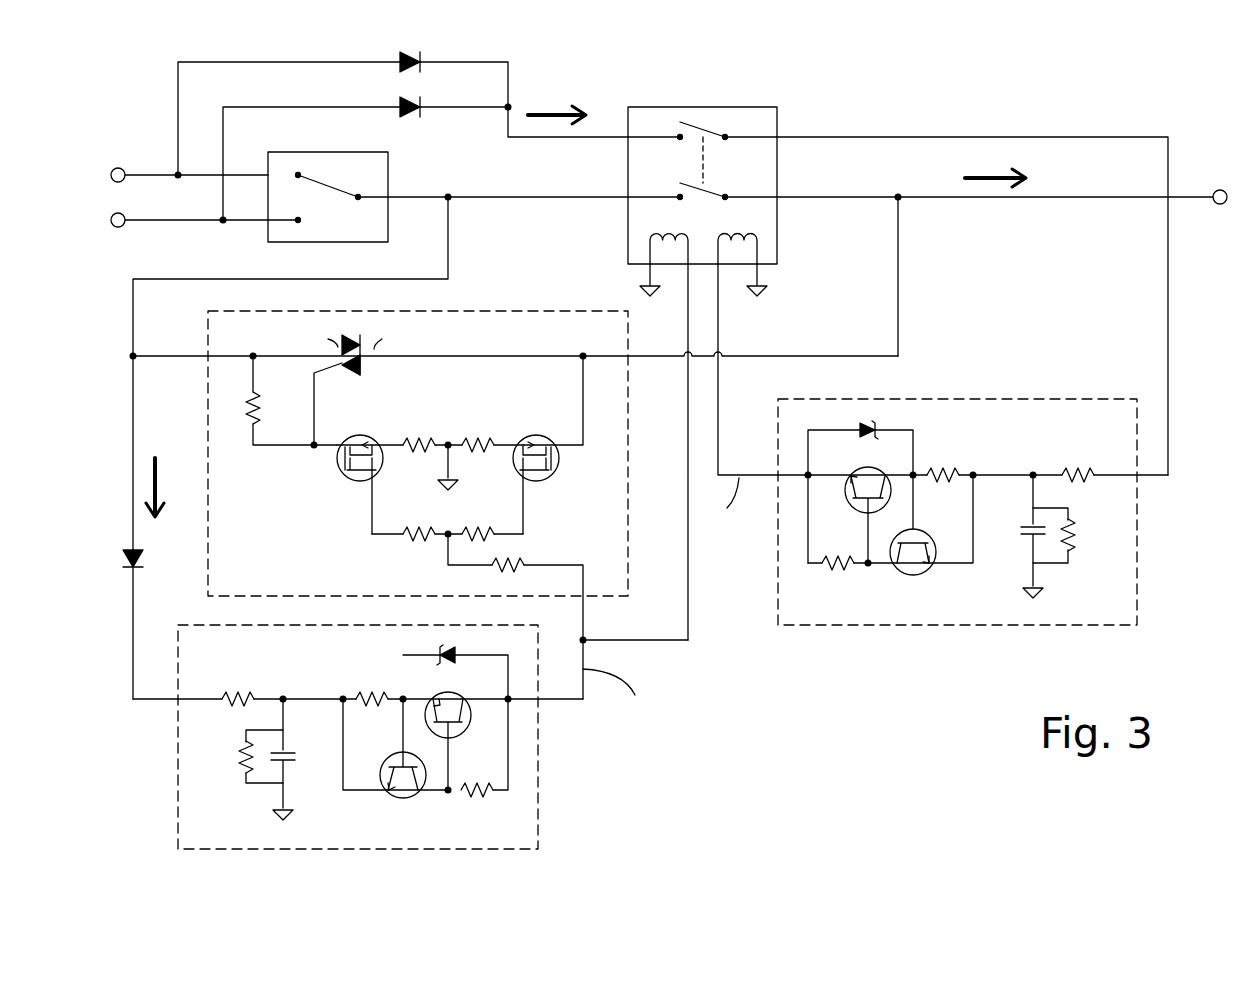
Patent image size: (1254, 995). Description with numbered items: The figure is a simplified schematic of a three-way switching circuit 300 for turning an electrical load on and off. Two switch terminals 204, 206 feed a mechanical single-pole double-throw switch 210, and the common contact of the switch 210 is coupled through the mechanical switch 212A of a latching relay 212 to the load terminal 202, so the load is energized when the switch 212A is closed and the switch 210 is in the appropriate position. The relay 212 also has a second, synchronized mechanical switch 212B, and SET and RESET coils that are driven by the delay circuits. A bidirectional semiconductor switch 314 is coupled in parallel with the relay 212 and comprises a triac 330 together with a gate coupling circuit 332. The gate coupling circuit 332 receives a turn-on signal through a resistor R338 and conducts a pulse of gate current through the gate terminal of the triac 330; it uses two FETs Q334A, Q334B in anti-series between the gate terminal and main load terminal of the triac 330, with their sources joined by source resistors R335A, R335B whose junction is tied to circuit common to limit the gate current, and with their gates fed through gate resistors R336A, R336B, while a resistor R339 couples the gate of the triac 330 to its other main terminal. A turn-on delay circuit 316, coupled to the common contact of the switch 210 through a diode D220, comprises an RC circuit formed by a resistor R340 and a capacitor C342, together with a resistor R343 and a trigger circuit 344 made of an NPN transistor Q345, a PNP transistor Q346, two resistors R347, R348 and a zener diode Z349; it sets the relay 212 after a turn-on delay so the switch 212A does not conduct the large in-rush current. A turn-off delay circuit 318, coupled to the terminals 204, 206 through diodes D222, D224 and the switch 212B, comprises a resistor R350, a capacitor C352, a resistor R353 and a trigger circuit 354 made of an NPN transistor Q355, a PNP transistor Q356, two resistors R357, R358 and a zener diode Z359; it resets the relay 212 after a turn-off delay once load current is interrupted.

The three-way switching circuit 300 is at (809, 727).
The load terminal 202 is at (1220, 188).
The switch terminal 204 is at (121, 168).
The switch terminal 206 is at (118, 228).
The single-pole double-throw switch 210 is at (388, 170).
The relay 212 is at (705, 182).
The mechanical switch 212A is at (720, 124).
The mechanical switch 212B is at (728, 187).
The diode D220 is at (150, 553).
The diode D222 is at (403, 70).
The diode D224 is at (405, 118).
The bidirectional semiconductor switch 314 is at (630, 530).
The turn-on delay circuit 316 is at (538, 780).
The turn-off delay circuit 318 is at (1138, 562).
The triac 330 is at (358, 375).
The gate coupling circuit 332 is at (335, 538).
The FET Q334A is at (553, 470).
The FET Q334B is at (356, 488).
The source resistor R335A is at (475, 438).
The source resistor R335B is at (423, 440).
The gate resistor R336A is at (476, 528).
The gate resistor R336B is at (423, 540).
The resistor R338 is at (515, 563).
The resistor R339 is at (291, 400).
The resistor R340 is at (236, 696).
The capacitor C342 is at (293, 762).
The resistor R343 is at (243, 761).
The trigger circuit 344 is at (369, 654).
The NPN bipolar junction transistor Q345 is at (440, 698).
The PNP bipolar junction transistor Q346 is at (394, 798).
The resistor R347 is at (366, 695).
The resistor R348 is at (495, 795).
The zener diode Z349 is at (455, 655).
The resistor R350 is at (1078, 470).
The capacitor C352 is at (1028, 530).
The resistor R353 is at (1074, 543).
The trigger circuit 354 is at (945, 430).
The NPN bipolar junction transistor Q355 is at (877, 467).
The PNP bipolar junction transistor Q356 is at (918, 571).
The resistor R357 is at (953, 470).
The resistor R358 is at (819, 567).
The zener diode Z359 is at (857, 426).